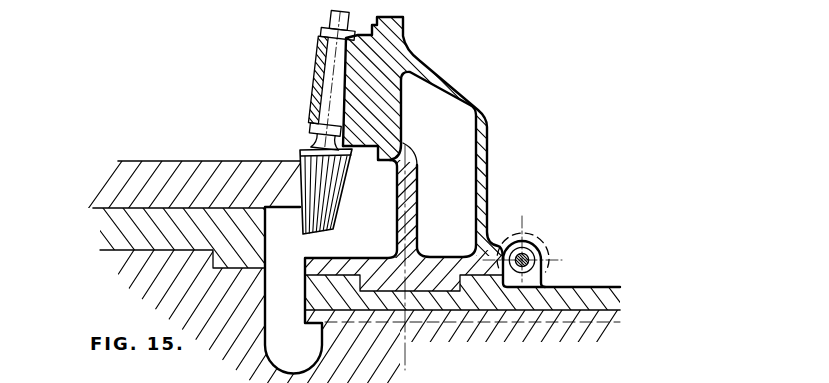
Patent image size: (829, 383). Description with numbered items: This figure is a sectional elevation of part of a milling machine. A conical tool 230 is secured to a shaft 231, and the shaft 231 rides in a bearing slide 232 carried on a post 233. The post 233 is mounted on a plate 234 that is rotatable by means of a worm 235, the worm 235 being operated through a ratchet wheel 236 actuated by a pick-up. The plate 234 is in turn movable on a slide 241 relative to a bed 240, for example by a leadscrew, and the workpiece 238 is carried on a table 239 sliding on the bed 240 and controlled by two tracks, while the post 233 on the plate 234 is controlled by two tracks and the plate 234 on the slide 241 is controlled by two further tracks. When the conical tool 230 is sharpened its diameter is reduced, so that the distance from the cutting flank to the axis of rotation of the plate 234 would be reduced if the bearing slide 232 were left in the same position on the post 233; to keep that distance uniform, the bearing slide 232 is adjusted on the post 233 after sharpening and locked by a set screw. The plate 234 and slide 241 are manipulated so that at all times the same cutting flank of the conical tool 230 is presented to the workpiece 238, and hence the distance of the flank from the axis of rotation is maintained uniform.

The conical tool 230 is at (322, 180).
The shaft 231 is at (325, 112).
The bearing slide 232 is at (343, 66).
The post 233 is at (443, 115).
The plate 234 is at (420, 286).
The worm 235 is at (529, 256).
The ratchet wheel 236 is at (534, 228).
The workpiece 238 is at (165, 172).
The table 239 is at (115, 225).
The bed 240 is at (168, 270).
The slide 241 is at (557, 301).